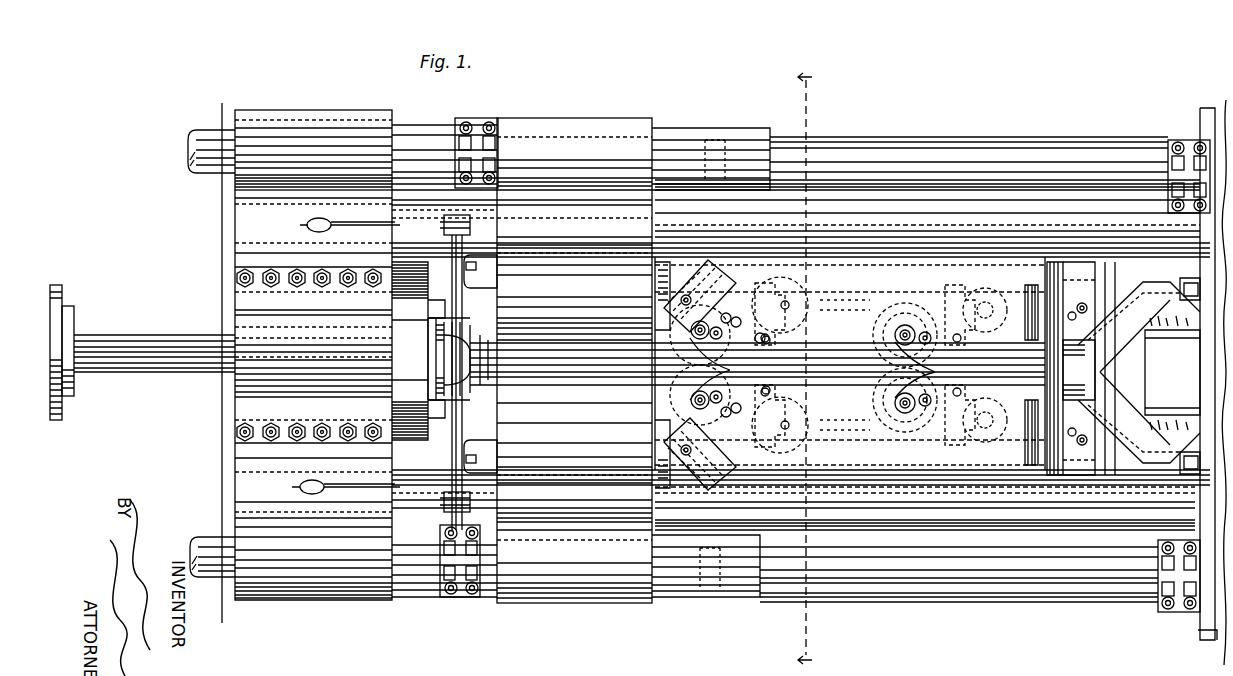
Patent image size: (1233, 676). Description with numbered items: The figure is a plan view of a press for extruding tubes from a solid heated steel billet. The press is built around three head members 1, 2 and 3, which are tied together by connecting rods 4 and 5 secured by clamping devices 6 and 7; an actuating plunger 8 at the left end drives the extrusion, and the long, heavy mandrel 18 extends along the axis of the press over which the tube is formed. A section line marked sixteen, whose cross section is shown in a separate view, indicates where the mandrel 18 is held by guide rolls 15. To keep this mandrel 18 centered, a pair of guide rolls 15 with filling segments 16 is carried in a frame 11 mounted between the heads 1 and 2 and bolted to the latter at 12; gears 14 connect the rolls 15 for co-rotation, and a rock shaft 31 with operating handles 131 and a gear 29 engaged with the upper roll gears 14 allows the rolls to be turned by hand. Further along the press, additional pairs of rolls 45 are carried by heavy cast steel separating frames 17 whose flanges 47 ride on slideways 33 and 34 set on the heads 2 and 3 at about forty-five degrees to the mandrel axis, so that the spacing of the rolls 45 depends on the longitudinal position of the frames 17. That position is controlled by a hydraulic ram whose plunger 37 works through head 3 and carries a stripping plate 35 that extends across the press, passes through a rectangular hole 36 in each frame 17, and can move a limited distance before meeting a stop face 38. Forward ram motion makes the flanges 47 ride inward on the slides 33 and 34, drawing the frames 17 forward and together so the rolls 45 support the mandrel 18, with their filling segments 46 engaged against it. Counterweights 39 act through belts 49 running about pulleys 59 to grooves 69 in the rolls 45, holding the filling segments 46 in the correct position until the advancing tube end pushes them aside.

The head member 1 is at (235, 458).
The head member 2 is at (612, 148).
The head member 3 is at (1215, 128).
The connecting rod 4 is at (1115, 588).
The connecting rod 5 is at (1038, 510).
The clamping device 6 is at (1180, 612).
The clamping device 7 is at (243, 298).
The actuating plunger 8 is at (168, 345).
The frame 11 is at (410, 351).
The bolt 12 is at (490, 452).
The operating handle 131 is at (292, 487).
The roll gear 14 is at (440, 420).
The guide roll 15 is at (490, 395).
The filling segment 16 is at (825, 367).
The separating frame 17 is at (838, 440).
The mandrel 18 is at (922, 364).
The gear 29 is at (455, 400).
The rock shaft 31 is at (450, 452).
The slideway 33 is at (720, 450).
The slideway 34 is at (1180, 462).
The stripping plate 35 is at (1063, 465).
The rectangular hole 36 is at (1040, 460).
The ram plunger 37 is at (1139, 368).
The stop face 38 is at (1084, 383).
The counterweight 39 is at (978, 450).
The roll 45 is at (890, 350).
The filling segment 46 is at (912, 358).
The flange 47 is at (1122, 448).
The belt 49 is at (905, 445).
The pulley 59 is at (940, 450).
The groove 69 is at (873, 445).